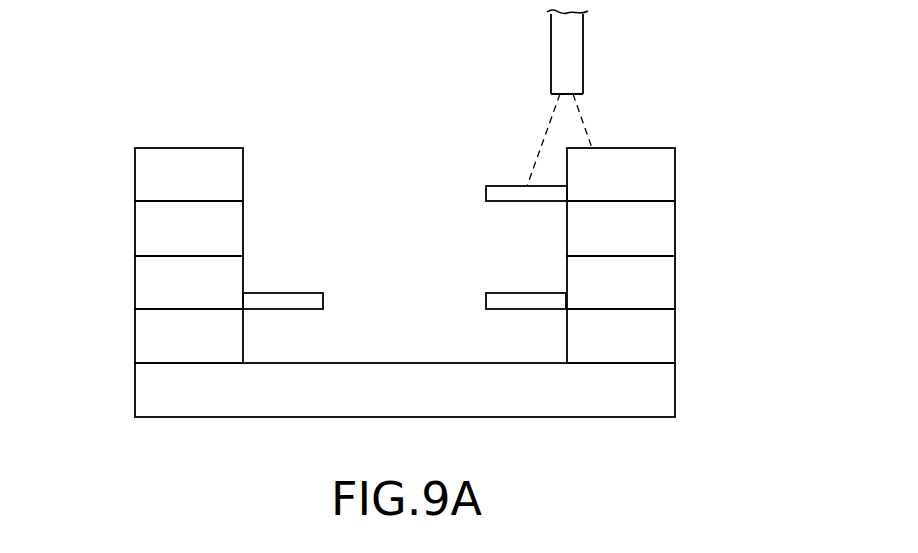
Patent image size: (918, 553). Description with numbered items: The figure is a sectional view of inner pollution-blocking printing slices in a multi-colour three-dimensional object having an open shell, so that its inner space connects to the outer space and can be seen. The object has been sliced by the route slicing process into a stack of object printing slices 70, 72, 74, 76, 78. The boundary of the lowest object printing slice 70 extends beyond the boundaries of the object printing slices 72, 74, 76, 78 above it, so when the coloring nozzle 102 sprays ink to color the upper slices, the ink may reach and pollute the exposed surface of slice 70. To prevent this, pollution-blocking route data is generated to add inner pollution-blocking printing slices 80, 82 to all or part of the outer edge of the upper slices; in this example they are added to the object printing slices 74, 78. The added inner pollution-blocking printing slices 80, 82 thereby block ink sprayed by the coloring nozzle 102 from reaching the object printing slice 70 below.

The object printing slice 70 is at (667, 396).
The object printing slice 72 is at (143, 341).
The object printing slice 74 is at (143, 287).
The object printing slice 76 is at (143, 233).
The object printing slice 78 is at (143, 179).
The inner pollution-blocking printing slice 80 is at (498, 302).
The inner pollution-blocking printing slice 82 is at (518, 190).
The coloring nozzle 102 is at (572, 52).